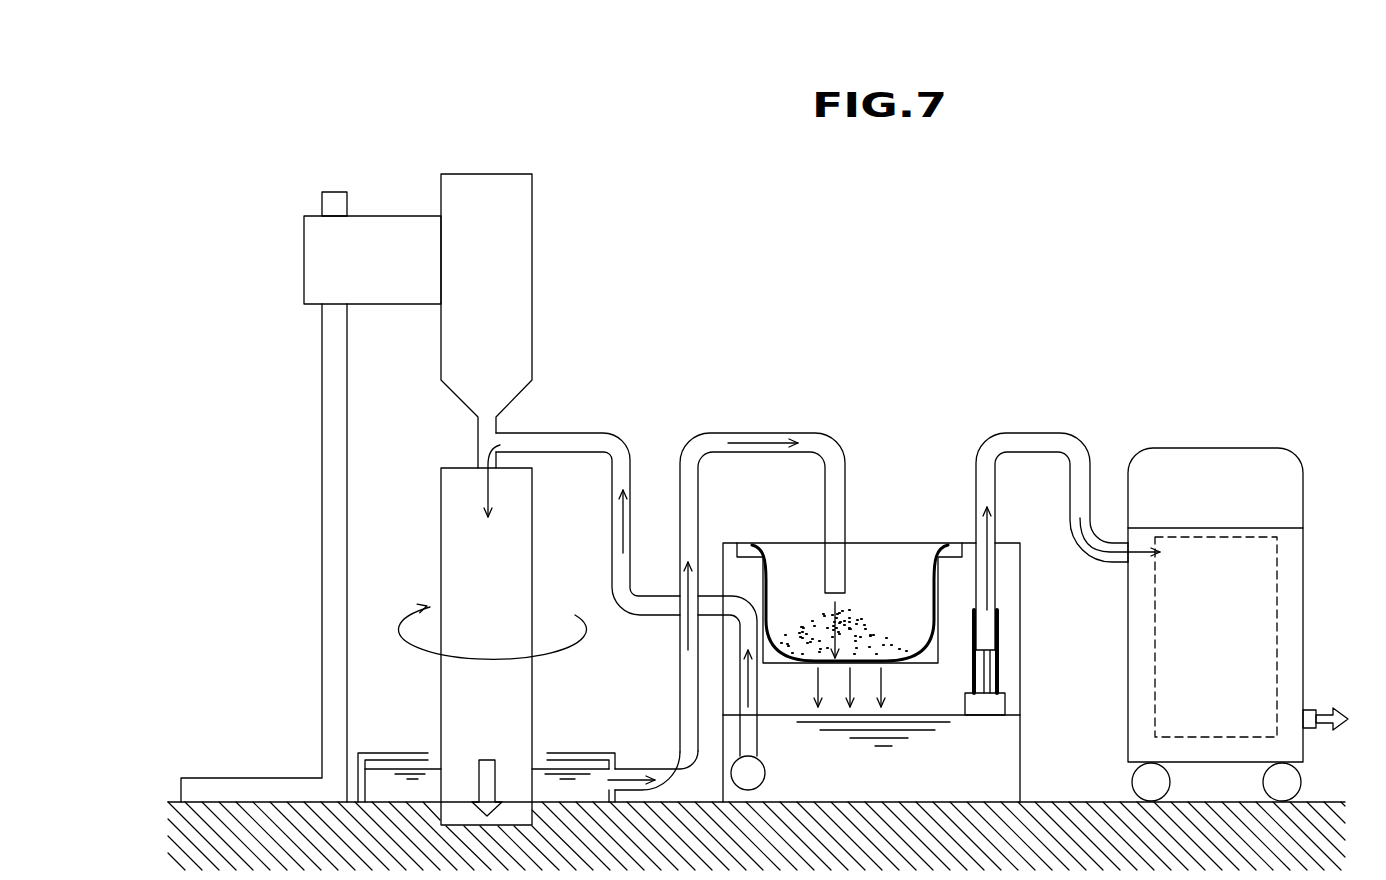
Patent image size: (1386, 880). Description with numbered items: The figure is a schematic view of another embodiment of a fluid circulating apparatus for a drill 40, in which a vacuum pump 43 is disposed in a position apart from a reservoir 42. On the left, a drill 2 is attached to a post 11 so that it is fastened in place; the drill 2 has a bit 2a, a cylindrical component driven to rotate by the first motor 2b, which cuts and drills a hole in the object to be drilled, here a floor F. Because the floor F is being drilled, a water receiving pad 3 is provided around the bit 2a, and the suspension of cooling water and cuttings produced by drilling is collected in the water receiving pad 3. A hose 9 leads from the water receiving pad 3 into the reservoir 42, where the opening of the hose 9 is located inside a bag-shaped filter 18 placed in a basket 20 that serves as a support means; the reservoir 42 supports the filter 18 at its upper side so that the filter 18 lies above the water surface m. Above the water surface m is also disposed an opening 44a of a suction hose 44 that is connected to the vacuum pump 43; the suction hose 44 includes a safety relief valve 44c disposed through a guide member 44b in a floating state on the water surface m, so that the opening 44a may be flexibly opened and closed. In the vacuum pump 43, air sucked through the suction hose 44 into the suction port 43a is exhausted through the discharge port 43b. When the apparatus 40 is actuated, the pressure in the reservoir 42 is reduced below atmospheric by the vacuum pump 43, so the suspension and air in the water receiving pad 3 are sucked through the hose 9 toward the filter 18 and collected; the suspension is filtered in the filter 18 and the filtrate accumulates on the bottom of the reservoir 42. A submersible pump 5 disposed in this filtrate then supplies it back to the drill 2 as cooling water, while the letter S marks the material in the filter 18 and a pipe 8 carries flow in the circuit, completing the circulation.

The drill 2 is at (397, 499).
The bit 2a is at (457, 498).
The first motor 2b is at (455, 345).
The water receiving pad 3 is at (397, 758).
The submersible pump 5 is at (727, 773).
The supply pipe 8 is at (575, 432).
The hose 9 is at (760, 432).
The post 11 is at (333, 602).
The filter 18 is at (923, 593).
The basket 20 is at (937, 632).
The fluid circulating apparatus for a drill 40 is at (858, 233).
The reservoir 42 is at (800, 542).
The vacuum pump 43 is at (1267, 432).
The suction port 43a is at (1142, 542).
The discharge port 43b is at (1313, 703).
The suction hose 44 is at (1037, 432).
The opening 44a is at (990, 662).
The guide member 44b is at (998, 678).
The safety relief valve 44c is at (998, 707).
The slurry S is at (775, 632).
The water surface m is at (898, 715).
The floor F is at (1092, 800).